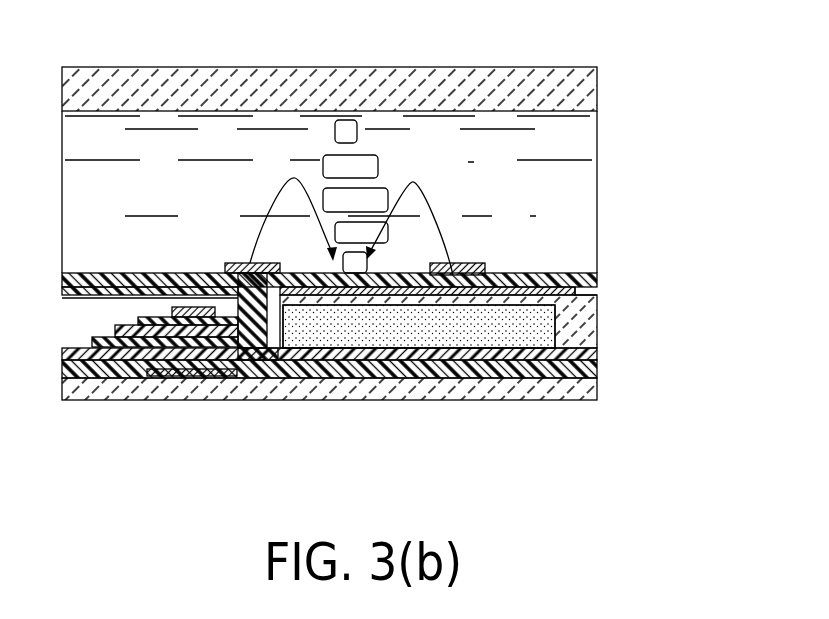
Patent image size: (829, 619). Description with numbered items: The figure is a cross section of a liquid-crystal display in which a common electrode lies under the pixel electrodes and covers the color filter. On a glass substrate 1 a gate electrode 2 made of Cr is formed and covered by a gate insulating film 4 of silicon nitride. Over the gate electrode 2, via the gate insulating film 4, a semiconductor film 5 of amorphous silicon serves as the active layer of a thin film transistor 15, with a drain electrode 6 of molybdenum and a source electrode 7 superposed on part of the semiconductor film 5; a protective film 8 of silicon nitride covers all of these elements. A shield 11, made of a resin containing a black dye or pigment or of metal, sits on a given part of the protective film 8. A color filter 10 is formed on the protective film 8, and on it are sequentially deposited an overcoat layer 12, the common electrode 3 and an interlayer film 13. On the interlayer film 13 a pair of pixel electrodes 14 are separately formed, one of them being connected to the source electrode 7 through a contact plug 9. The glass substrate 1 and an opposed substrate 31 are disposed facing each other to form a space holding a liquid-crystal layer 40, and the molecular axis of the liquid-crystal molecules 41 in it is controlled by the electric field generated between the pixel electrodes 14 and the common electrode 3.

The glass substrate 1 is at (592, 396).
The gate electrode 2 is at (203, 373).
The common electrode 3 is at (520, 275).
The gate insulating film 4 is at (597, 371).
The semiconductor film 5 is at (167, 352).
The drain electrode 6 is at (127, 350).
The source electrode 7 is at (247, 348).
The protective film 8 is at (597, 352).
The contact plug 9 is at (268, 337).
The color filter 10 is at (427, 350).
The shield 11 is at (183, 307).
The overcoat layer 12 is at (590, 313).
The interlayer film 13 is at (596, 280).
The pixel electrodes 14 is at (233, 262).
The thin film transistor 15 is at (232, 472).
The opposed substrate 31 is at (597, 89).
The liquid-crystal layer 40 is at (597, 160).
The liquid-crystal molecules 41 is at (386, 158).